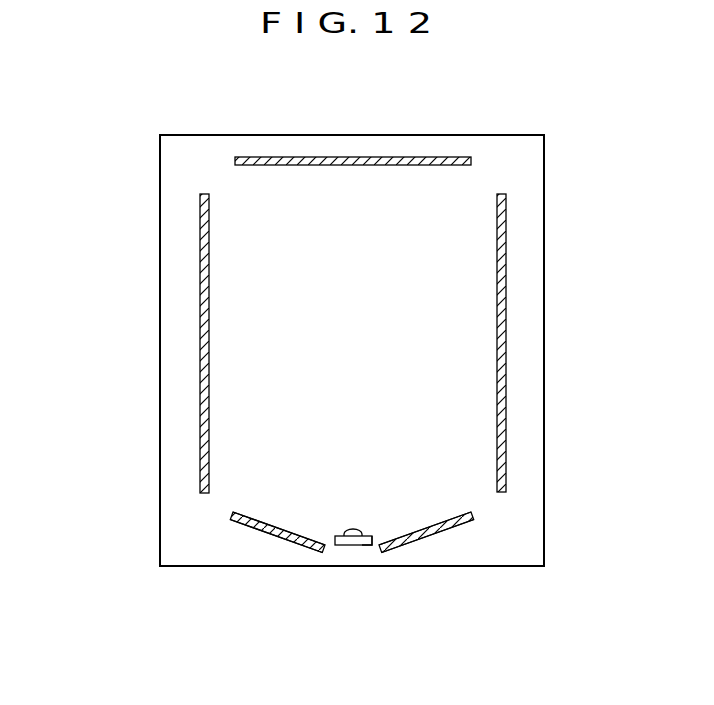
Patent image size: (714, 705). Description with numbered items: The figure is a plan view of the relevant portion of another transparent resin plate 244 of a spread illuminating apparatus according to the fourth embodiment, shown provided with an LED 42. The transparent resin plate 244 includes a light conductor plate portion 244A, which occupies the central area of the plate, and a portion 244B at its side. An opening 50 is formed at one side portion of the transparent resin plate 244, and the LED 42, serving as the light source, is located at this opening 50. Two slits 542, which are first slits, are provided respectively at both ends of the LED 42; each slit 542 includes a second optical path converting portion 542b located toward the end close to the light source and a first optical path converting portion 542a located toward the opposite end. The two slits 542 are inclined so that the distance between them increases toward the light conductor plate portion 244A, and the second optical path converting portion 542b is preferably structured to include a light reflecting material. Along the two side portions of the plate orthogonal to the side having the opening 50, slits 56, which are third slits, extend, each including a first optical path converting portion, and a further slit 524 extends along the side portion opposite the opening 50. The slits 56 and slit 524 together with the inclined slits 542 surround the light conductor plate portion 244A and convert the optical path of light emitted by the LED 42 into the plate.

The slit 524 is at (338, 157).
The slits (third slits) 56 is at (200, 278).
The transparent resin plate 244 is at (545, 442).
The light conductor plate portion 244A is at (392, 333).
The transparent resin plate portion 244B is at (150, 477).
The slits (first slits) 542 is at (272, 544).
The first optical path converting portion 542a is at (244, 522).
The second optical path converting portion 542b is at (315, 550).
The opening 50 is at (346, 558).
The LED 42 is at (365, 545).